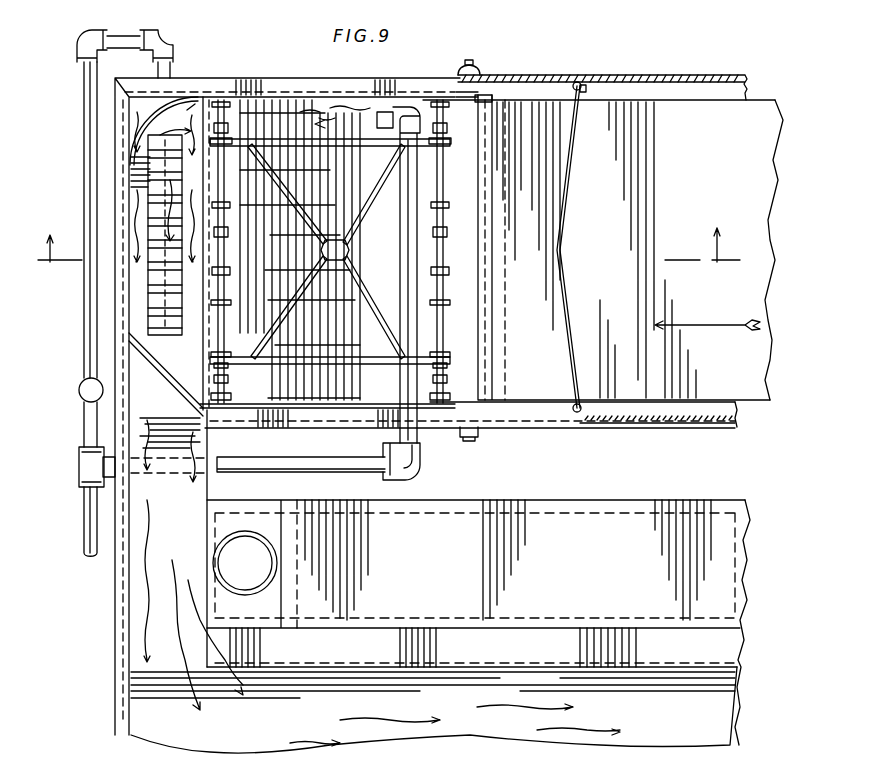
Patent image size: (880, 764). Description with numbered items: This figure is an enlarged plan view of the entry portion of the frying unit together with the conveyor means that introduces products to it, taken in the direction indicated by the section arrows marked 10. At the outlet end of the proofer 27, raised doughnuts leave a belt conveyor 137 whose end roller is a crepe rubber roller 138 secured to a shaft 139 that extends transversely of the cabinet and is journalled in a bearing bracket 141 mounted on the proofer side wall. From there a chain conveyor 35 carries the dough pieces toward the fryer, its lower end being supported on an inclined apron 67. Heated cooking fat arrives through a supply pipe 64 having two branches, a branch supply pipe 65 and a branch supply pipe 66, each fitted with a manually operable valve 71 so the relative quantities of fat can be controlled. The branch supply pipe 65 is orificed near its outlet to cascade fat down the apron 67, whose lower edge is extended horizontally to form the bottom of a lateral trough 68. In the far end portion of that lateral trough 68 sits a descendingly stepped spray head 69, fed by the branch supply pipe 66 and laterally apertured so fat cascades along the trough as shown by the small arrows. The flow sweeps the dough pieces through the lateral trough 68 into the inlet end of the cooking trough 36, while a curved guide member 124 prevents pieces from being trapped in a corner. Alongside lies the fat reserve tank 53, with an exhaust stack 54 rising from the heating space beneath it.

The section line 10 is at (389, 262).
The proofer 27 is at (638, 72).
The chain conveyor 35 is at (324, 132).
The cooking trough 36 is at (298, 731).
The fat reserve tank 53 is at (612, 571).
The exhaust stack 54 is at (245, 578).
The supply pipe 64 is at (87, 518).
The branch supply pipe 65 is at (280, 440).
The branch supply pipe 66 is at (90, 338).
The apron 67 is at (340, 190).
The lateral trough 68 is at (143, 405).
The spray head 69 is at (163, 215).
The valve 71 is at (78, 391).
The curved guide member 124 is at (150, 117).
The belt conveyor 137 is at (537, 294).
The crepe rubber roller 138 is at (472, 103).
The shaft 139 is at (466, 65).
The bearing bracket 141 is at (480, 73).